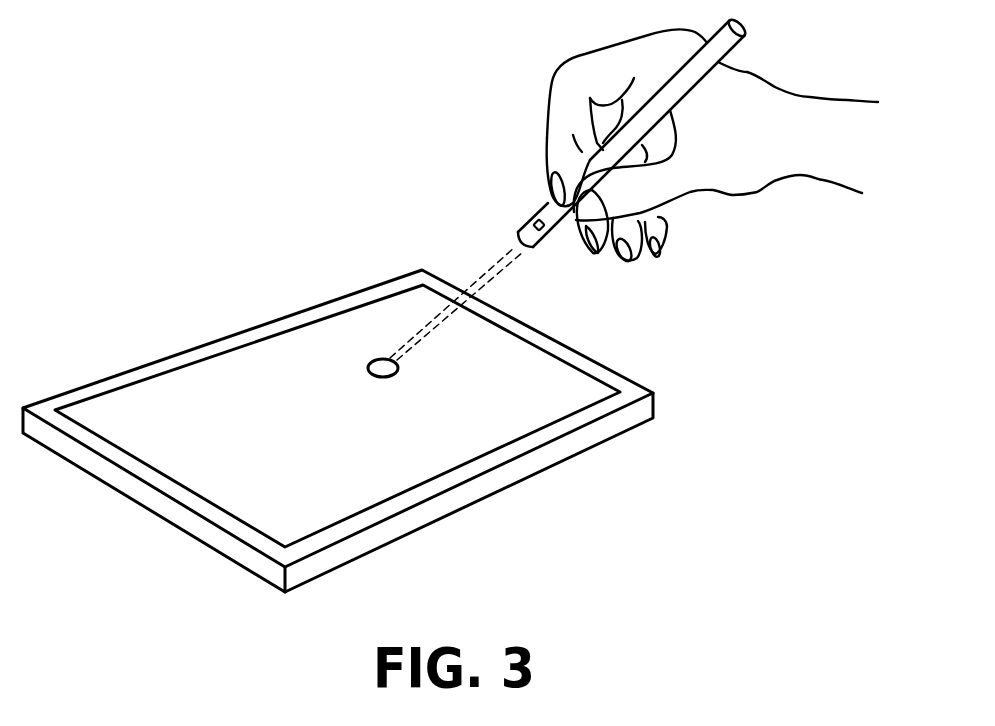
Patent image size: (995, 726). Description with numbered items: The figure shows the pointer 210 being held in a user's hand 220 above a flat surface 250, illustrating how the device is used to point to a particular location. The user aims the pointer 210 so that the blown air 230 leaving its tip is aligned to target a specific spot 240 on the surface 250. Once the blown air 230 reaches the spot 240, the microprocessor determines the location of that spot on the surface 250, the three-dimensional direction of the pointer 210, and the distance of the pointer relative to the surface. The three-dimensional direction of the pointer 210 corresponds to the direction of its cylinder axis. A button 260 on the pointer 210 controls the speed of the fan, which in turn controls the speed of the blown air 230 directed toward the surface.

The pointer 210 is at (723, 50).
The user's hand 220 is at (743, 180).
The blown air 230 is at (505, 275).
The spot 240 is at (365, 367).
The surface 250 is at (556, 452).
The button 260 is at (537, 212).